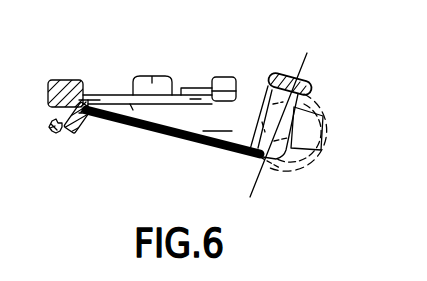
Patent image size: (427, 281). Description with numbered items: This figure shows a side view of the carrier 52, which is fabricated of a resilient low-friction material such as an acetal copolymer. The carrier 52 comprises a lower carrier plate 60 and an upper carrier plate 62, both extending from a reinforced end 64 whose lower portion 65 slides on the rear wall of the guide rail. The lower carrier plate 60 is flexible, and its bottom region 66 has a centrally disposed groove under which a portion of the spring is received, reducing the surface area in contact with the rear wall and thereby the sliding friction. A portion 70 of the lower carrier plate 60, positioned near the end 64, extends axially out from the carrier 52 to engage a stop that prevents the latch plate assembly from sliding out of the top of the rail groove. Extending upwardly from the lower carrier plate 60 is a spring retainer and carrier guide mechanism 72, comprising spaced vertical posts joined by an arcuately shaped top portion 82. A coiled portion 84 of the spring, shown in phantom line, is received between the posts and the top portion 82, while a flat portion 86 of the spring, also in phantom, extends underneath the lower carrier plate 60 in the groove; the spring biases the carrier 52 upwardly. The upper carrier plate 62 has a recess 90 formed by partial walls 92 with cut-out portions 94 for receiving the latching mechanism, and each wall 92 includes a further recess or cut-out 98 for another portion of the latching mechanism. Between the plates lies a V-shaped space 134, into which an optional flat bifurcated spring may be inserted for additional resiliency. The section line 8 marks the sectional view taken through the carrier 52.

The section line 8- 8 is at (307, 53).
The carrier 52 is at (103, 125).
The lower carrier plate 60 is at (150, 128).
The upper carrier plate 62 is at (115, 90).
The reinforced end 64 is at (54, 80).
The lower portion 65 is at (60, 132).
The bottom region 66 is at (185, 149).
The extension 70 is at (57, 129).
The spring retainer and carrier guide mechanism 72 is at (310, 80).
The top portion 82 is at (283, 76).
The coiled portion 84 is at (346, 108).
The flat portion 86 is at (273, 183).
The recess 90 is at (178, 88).
The partial walls 92 is at (152, 76).
The cut-out portions 94 is at (97, 88).
The recess or cut-out 98 is at (207, 79).
The V-shaped space 134 is at (224, 119).